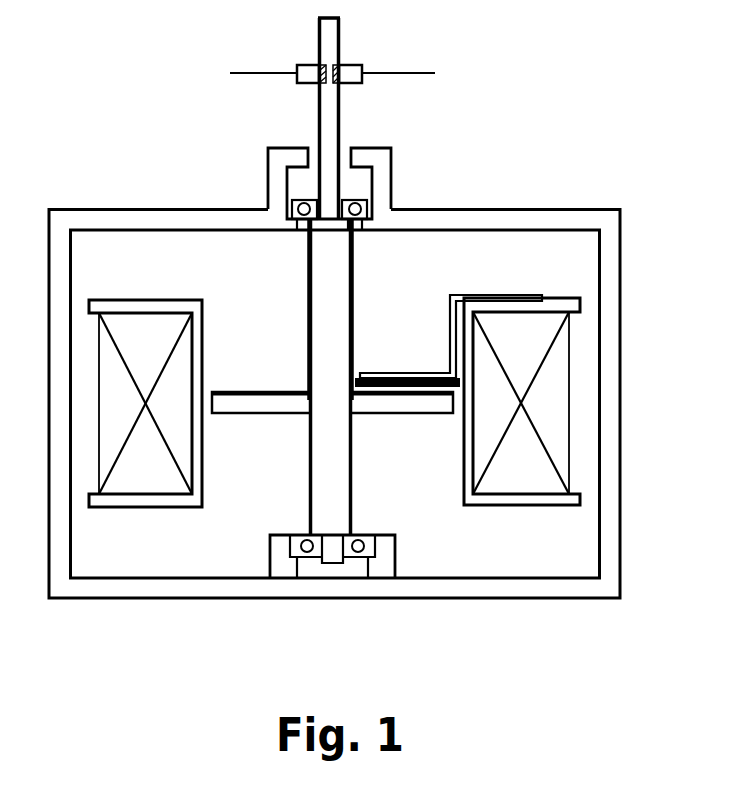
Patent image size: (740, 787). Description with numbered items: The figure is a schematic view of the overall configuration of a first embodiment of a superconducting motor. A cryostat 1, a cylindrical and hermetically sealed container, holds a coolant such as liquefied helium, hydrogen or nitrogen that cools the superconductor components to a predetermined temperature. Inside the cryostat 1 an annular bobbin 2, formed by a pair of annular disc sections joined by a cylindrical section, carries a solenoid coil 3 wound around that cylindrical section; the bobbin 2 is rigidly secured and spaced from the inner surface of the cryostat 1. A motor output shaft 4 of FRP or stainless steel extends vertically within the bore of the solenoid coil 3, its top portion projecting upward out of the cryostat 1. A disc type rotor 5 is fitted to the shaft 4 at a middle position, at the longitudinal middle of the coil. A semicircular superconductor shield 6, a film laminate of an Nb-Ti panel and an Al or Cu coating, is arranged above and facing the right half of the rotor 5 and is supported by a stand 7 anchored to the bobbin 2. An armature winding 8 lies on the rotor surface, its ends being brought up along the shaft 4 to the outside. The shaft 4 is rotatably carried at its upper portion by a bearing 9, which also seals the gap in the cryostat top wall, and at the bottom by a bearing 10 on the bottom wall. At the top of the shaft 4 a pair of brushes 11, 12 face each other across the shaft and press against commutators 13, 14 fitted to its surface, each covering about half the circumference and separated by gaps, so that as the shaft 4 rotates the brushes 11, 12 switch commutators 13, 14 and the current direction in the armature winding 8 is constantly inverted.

The cryostat 1 is at (127, 218).
The bobbin 2 is at (132, 300).
The solenoid coil 3 is at (142, 478).
The motor output shaft 4 is at (343, 483).
The disc type rotor 5 is at (380, 409).
The superconductor shield 6 is at (373, 377).
The stand 7 is at (403, 367).
The armature winding 8 is at (308, 333).
The bearing 9 is at (367, 207).
The bearing 10 is at (363, 555).
The brush 11 is at (357, 78).
The brush 12 is at (305, 78).
The commutator 13 is at (338, 65).
The commutator 14 is at (320, 65).